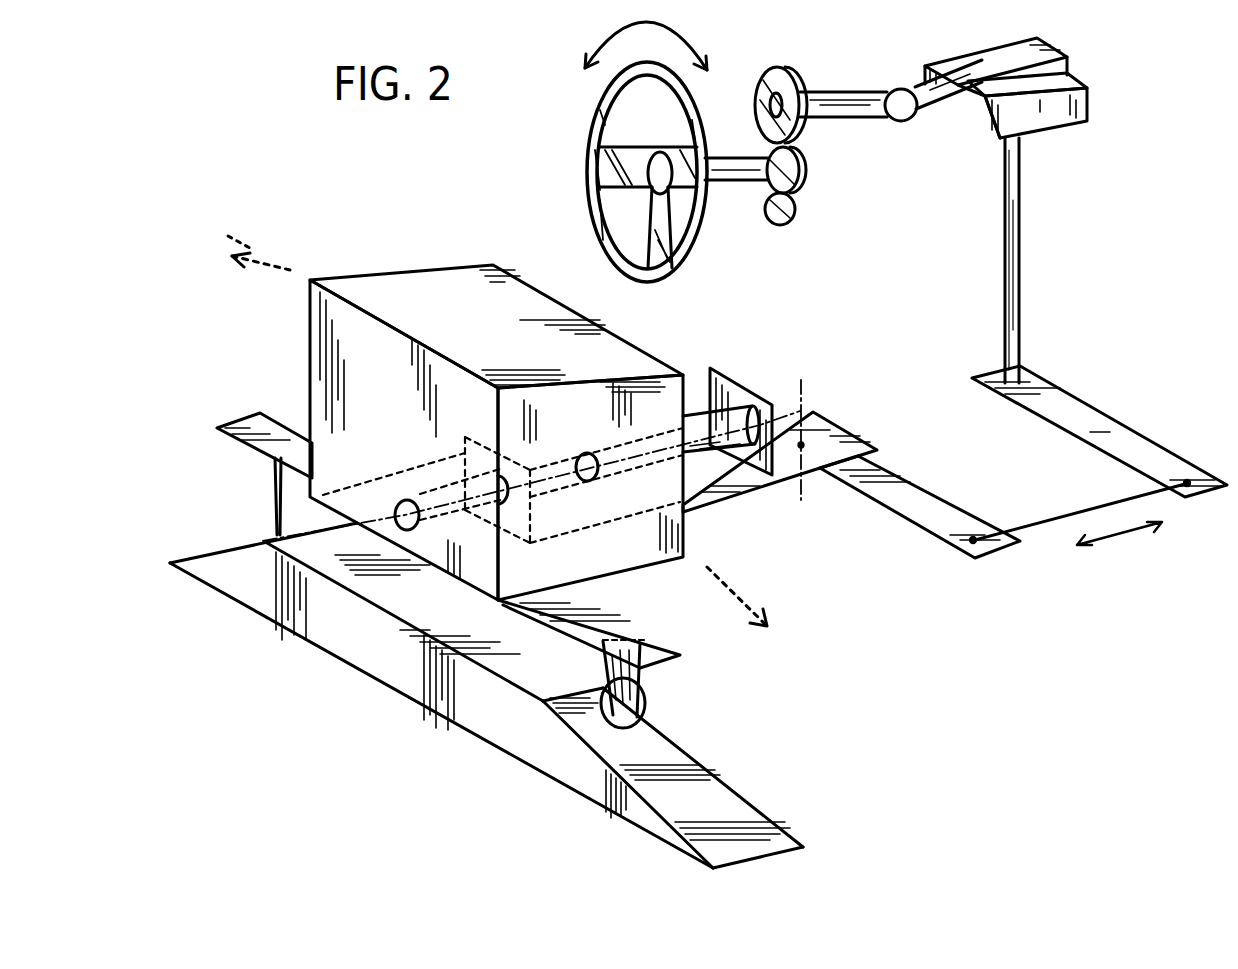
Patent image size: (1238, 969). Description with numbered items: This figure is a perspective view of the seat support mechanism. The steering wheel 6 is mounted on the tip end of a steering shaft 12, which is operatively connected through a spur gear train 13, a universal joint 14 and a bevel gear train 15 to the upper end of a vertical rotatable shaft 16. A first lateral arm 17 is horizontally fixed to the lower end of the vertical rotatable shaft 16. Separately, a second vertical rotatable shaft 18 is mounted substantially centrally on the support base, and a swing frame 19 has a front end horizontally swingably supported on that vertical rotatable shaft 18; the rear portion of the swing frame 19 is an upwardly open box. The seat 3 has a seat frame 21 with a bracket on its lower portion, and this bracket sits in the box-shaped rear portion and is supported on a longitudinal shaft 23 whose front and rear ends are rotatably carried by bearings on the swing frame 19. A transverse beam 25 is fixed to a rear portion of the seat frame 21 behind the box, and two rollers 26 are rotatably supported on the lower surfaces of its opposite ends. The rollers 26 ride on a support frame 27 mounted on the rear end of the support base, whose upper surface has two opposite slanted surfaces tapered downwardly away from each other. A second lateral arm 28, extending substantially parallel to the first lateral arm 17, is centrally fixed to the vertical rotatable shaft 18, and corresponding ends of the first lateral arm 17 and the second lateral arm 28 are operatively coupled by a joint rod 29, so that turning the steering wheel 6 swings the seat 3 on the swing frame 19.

The seat 3 is at (398, 272).
The steering wheel 6 is at (594, 176).
The steering shaft 12 is at (742, 187).
The spur gear train 13 is at (807, 127).
The universal joint 14 is at (905, 88).
The bevel gear train 15 is at (1092, 98).
The vertical rotatable shaft 16 is at (1020, 236).
The first lateral arm 17 is at (1103, 413).
The vertical rotatable shaft 18 is at (800, 388).
The swing frame 19 is at (700, 503).
The seat frame 21 is at (310, 378).
The longitudinal shaft 23 is at (722, 396).
The transverse beam 25 is at (680, 662).
The rollers 26 is at (272, 523).
The support frame 27 is at (340, 640).
The second lateral arm 28 is at (888, 514).
The joint rod 29 is at (1053, 512).